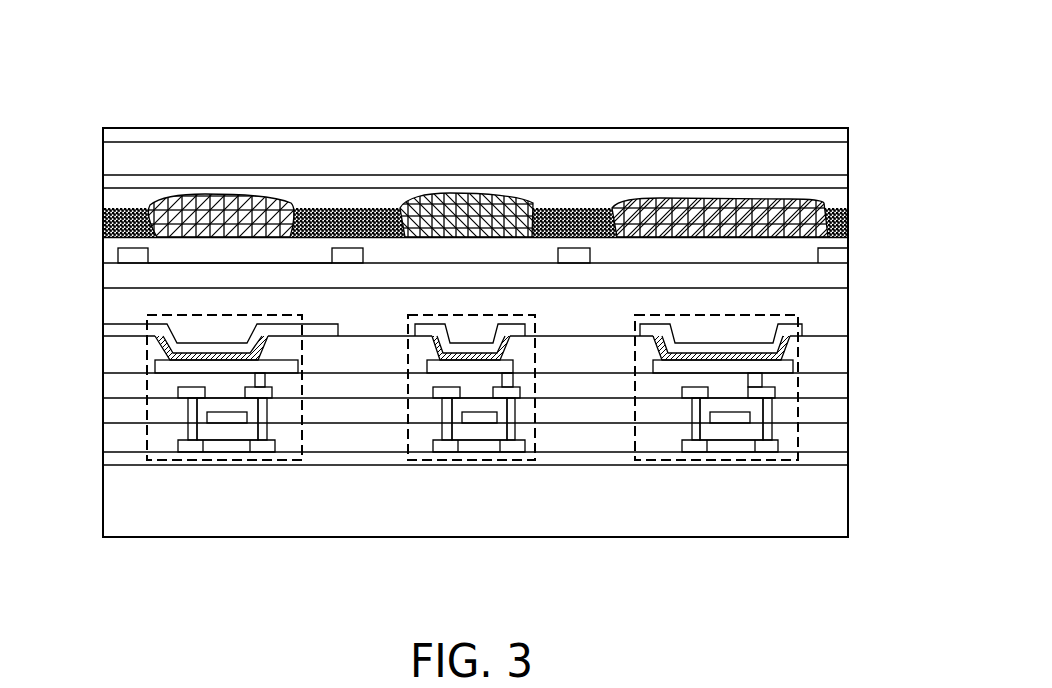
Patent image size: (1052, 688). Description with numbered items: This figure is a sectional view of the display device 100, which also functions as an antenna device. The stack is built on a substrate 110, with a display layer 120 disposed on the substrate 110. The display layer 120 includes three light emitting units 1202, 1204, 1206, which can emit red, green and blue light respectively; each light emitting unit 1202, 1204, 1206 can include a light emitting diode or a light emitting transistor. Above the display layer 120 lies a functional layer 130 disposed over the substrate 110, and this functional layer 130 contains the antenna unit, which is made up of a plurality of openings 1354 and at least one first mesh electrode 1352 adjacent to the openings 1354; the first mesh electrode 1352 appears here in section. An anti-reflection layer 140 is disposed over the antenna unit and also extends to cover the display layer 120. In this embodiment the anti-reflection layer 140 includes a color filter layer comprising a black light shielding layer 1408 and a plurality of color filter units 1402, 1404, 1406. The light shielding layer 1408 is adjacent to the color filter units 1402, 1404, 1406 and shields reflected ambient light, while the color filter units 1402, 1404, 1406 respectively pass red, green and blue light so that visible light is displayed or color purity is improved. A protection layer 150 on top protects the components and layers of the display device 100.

The display device 100 is at (784, 84).
The substrate 110 is at (380, 512).
The display layer 120 is at (100, 323).
The functional layer 130 is at (100, 239).
The anti-reflection layer 140 is at (100, 185).
The protection layer 150 is at (100, 130).
The light emitting unit 1202 is at (215, 462).
The light emitting unit 1204 is at (478, 462).
The light emitting unit 1206 is at (710, 462).
The first mesh electrode 1352 is at (133, 253).
The opening 1354 is at (228, 253).
The color filter unit 1402 is at (227, 207).
The color filter unit 1404 is at (470, 205).
The color filter unit 1406 is at (707, 205).
The light shielding layer 1408 is at (580, 217).